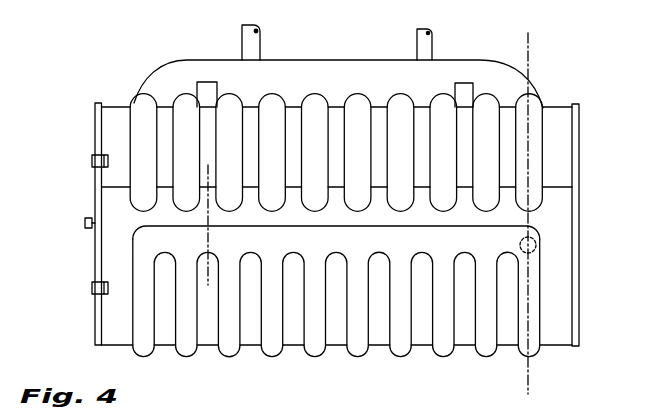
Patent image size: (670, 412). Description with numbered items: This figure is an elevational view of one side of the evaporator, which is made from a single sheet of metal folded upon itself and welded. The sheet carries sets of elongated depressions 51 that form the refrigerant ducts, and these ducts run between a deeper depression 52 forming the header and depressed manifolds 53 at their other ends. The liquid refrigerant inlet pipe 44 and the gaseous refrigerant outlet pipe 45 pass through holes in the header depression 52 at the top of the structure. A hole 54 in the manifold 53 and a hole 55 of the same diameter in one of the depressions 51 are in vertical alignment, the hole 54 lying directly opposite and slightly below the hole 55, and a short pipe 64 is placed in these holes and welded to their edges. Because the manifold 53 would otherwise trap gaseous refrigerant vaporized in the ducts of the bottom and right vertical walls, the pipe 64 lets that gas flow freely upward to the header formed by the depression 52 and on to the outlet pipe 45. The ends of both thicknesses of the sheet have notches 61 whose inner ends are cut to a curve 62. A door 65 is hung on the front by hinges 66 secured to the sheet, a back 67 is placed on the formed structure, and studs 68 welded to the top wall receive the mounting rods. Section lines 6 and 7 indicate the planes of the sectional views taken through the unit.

The liquid refrigerant inlet pipe 44 is at (418, 40).
The gaseous refrigerant outlet pipe 45 is at (260, 43).
The elongated depressions 51 is at (354, 112).
The depression 52 is at (166, 73).
The depressed manifolds 53 is at (357, 238).
The hole 54 is at (520, 246).
The hole 55 is at (536, 224).
The section line 6- 6 is at (527, 42).
The notches 61 is at (343, 193).
The curved end 62 is at (309, 214).
The pipe 64 is at (524, 236).
The door 65 is at (95, 200).
The hinges 66 is at (93, 159).
The back 67 is at (580, 238).
The studs 68 is at (209, 88).
The section line 7- 7 is at (183, 162).